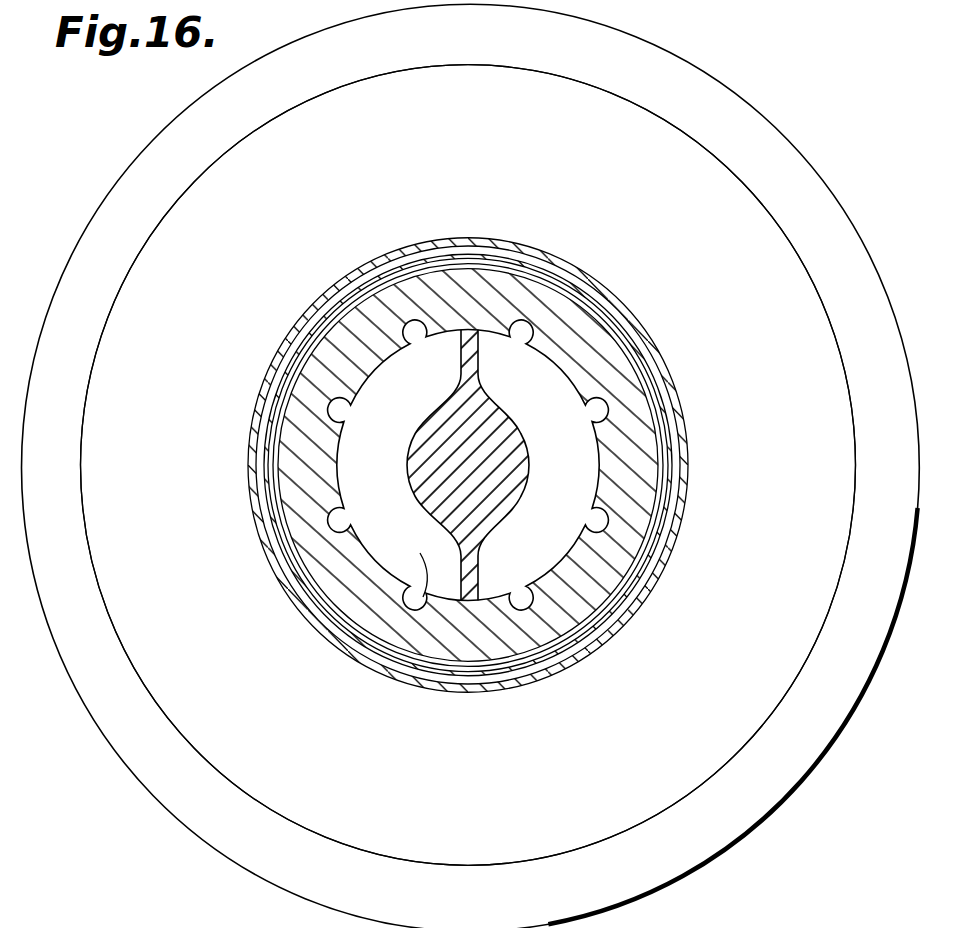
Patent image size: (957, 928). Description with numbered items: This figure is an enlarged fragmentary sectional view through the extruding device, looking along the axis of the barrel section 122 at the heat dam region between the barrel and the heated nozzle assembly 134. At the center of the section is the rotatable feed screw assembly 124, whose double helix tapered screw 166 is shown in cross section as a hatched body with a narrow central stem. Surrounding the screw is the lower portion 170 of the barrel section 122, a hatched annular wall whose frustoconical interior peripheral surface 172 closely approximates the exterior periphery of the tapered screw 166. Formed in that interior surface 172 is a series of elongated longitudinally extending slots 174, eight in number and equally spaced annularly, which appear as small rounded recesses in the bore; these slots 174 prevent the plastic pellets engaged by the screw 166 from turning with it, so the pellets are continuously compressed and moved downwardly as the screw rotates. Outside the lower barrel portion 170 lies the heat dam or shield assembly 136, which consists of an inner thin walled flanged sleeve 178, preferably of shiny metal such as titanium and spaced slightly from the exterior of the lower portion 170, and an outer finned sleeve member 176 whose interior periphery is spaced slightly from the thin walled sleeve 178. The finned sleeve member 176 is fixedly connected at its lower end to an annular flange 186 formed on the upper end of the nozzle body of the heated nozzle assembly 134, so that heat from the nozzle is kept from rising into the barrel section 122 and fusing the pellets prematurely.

The heated nozzle assembly 134 is at (698, 868).
The annular flange 186 is at (775, 788).
The heat dam or shield assembly 136 is at (709, 152).
The outer finned sleeve member 176 is at (262, 800).
The barrel section 122 is at (622, 352).
The inner thin walled flanged sleeve 178 is at (411, 664).
The lower portion of the barrel section 170 is at (648, 460).
The frustoconical interior peripheral surface 172 is at (468, 465).
The elongated longitudinally extending slots 174 is at (352, 532).
The double helix tapered screw 166 is at (563, 548).
The rotatable feed screw assembly 124 is at (480, 324).